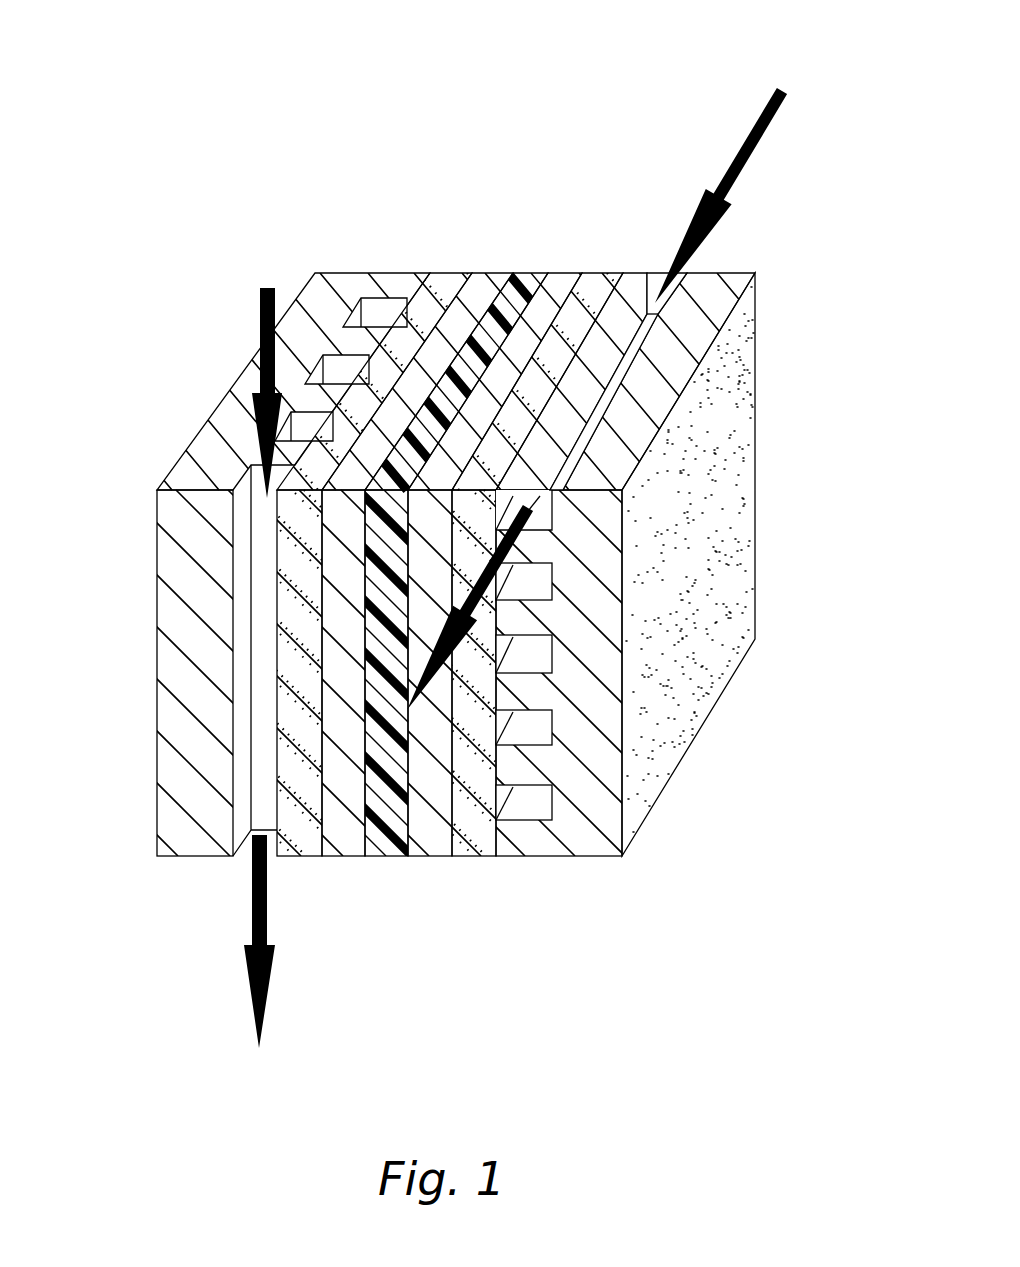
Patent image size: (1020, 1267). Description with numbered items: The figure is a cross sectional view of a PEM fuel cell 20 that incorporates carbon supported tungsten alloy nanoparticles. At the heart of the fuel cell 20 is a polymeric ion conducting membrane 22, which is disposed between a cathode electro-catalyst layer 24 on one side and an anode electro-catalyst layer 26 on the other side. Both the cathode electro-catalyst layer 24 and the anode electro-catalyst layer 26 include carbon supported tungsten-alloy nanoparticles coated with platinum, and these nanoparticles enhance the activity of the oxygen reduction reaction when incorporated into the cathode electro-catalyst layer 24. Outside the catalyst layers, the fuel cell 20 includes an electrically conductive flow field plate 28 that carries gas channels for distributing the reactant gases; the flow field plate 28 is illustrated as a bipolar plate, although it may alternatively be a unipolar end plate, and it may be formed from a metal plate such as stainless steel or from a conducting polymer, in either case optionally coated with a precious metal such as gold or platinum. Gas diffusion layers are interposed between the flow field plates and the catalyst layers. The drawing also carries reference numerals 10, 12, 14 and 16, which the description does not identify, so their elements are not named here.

The fuel cell 10 is at (214, 224).
The membrane electrode assembly 12 is at (582, 84).
The cathode catalyst layer 14 is at (565, 297).
The anode catalyst layer 16 is at (492, 290).
The PEM fuel cell 20 is at (538, 290).
The polymeric ion conducting membrane 22 is at (627, 295).
The cathode electro-catalyst layer 24 is at (440, 288).
The anode electro-catalyst layer 26 is at (372, 312).
The flow field plate 28 is at (200, 472).